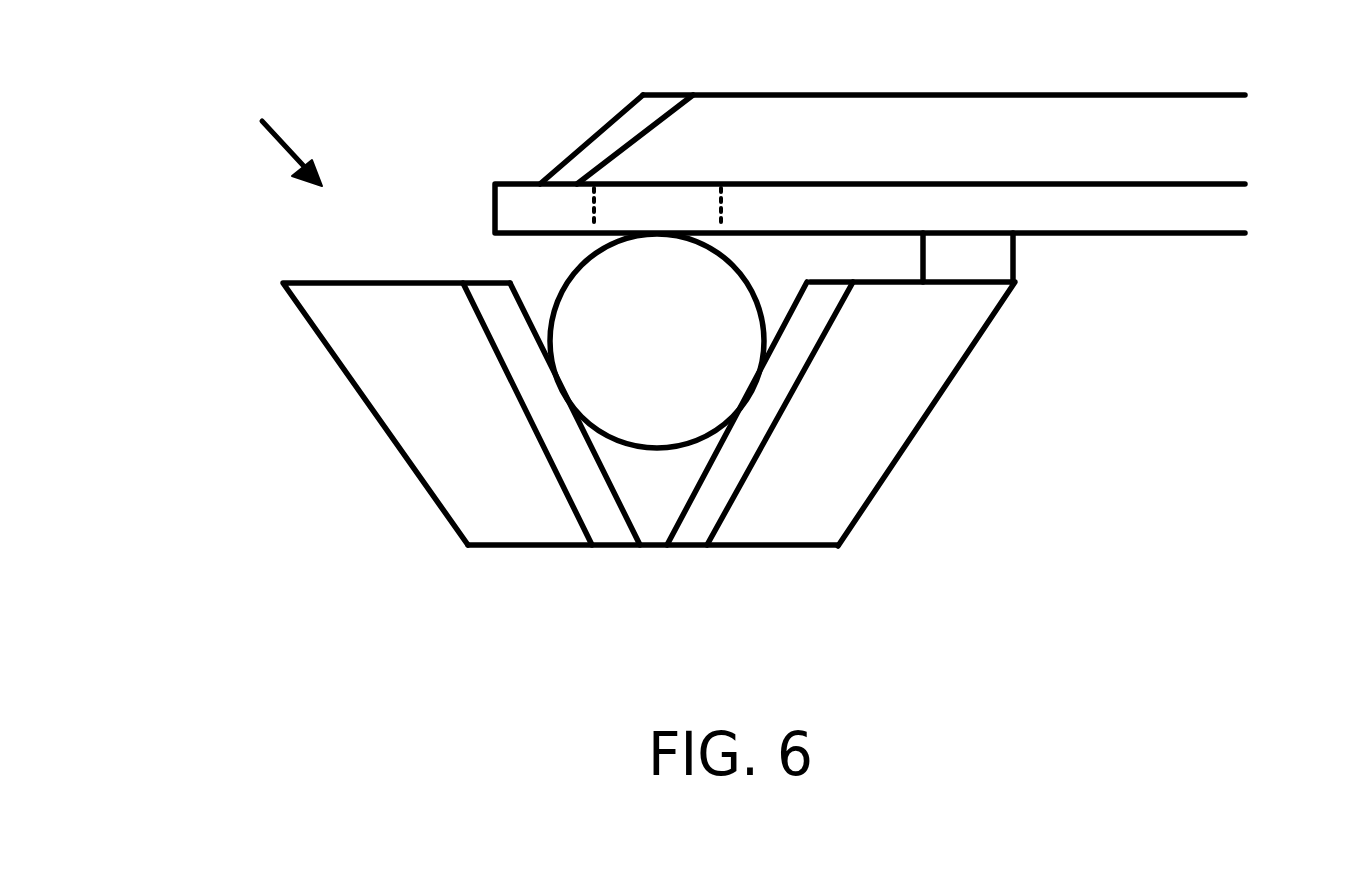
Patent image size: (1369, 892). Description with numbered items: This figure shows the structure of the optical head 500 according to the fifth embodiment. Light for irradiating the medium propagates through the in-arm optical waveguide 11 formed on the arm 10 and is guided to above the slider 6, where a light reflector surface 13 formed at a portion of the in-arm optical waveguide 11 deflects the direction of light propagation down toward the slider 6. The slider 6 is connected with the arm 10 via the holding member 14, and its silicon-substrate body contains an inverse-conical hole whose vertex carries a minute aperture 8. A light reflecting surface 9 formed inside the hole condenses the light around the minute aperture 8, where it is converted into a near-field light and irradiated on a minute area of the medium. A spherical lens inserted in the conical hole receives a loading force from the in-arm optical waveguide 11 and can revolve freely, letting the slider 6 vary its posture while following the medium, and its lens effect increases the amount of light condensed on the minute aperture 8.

The optical head 500 is at (262, 121).
The in-arm optical waveguide 11 is at (1105, 112).
The light reflector surface 13 is at (590, 152).
The arm 10 is at (1162, 207).
The holding member 14 is at (988, 253).
The slider 6 is at (453, 438).
The light reflecting surface 9 is at (727, 468).
The minute aperture 8 is at (660, 547).